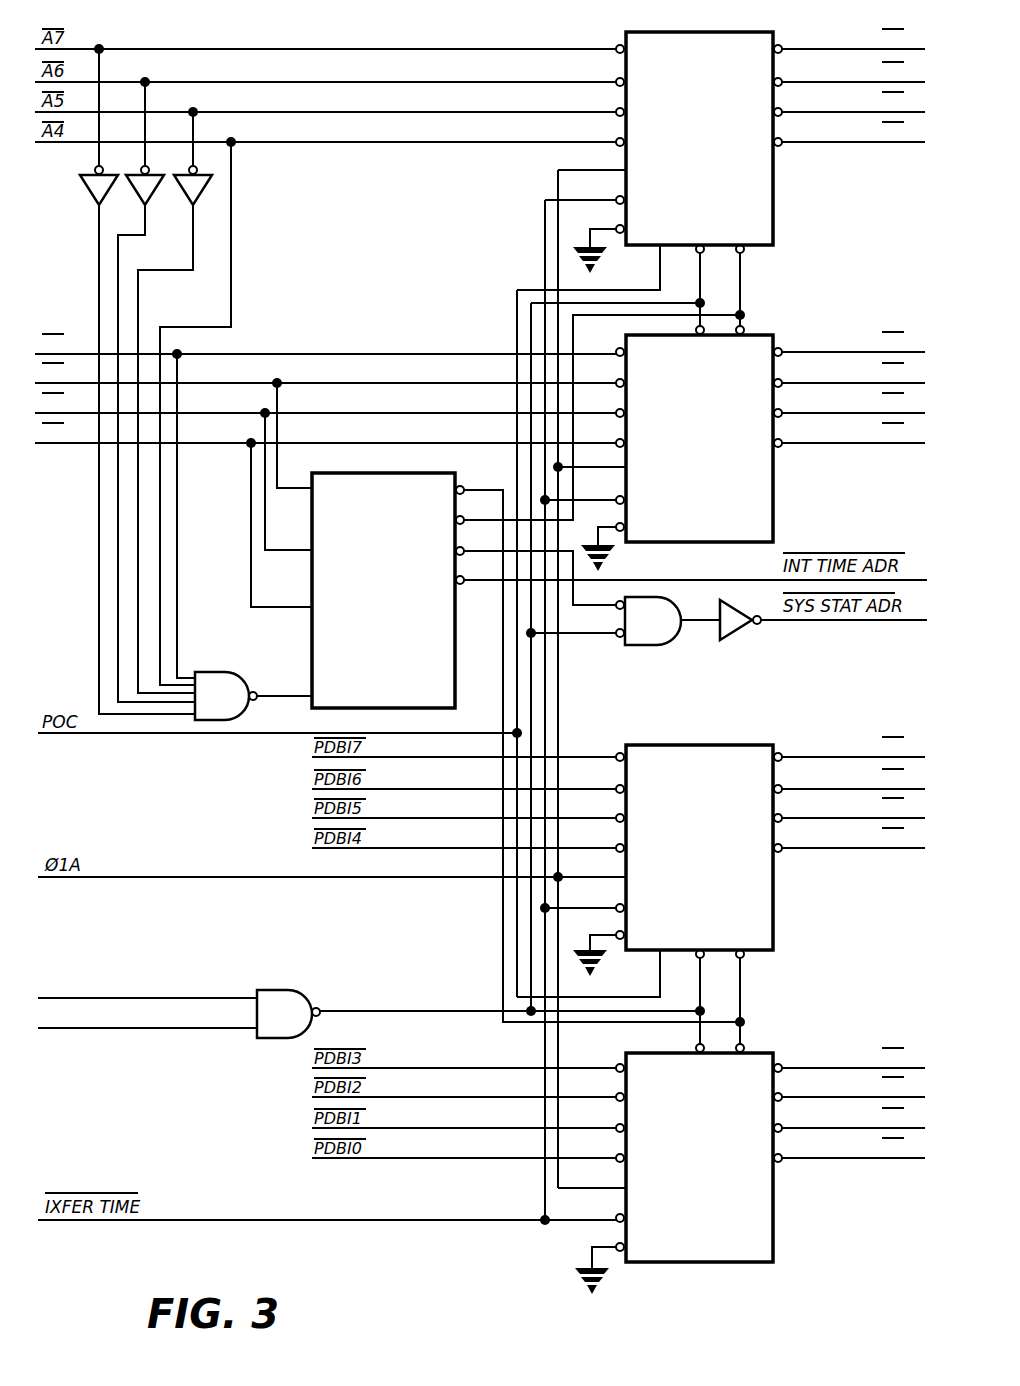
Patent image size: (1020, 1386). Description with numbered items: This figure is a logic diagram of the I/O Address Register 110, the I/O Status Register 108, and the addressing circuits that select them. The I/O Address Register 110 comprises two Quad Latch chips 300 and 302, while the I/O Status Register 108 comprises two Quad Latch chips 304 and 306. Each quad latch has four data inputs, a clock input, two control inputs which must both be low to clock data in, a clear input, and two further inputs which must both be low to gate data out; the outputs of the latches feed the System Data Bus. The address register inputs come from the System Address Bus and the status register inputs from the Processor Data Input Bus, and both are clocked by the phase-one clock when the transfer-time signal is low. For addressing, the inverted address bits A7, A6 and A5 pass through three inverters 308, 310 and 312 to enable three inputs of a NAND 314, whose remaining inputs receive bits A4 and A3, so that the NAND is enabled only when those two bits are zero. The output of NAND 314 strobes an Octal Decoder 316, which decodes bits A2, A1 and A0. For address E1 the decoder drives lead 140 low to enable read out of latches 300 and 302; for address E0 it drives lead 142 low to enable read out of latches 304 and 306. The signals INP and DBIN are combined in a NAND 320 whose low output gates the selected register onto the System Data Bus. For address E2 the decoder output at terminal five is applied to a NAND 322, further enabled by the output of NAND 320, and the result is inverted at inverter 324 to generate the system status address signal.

The I/O Status Register 108 is at (749, 1004).
The I/O Address Register 110 is at (749, 288).
The lead 140 is at (572, 372).
The lead 142 is at (503, 668).
The Quad Latch chip 300 is at (645, 20).
The Quad Latch chip 302 is at (632, 340).
The Quad Latch chip 304 is at (724, 746).
The Quad Latch chip 306 is at (778, 1056).
The inverter 308 is at (95, 196).
The inverter 310 is at (142, 197).
The inverter 312 is at (190, 197).
The NAND 314 is at (230, 684).
The Octal Decoder 316 is at (460, 488).
The NAND 320 is at (272, 995).
The NAND 322 is at (656, 645).
The inverter 324 is at (738, 636).